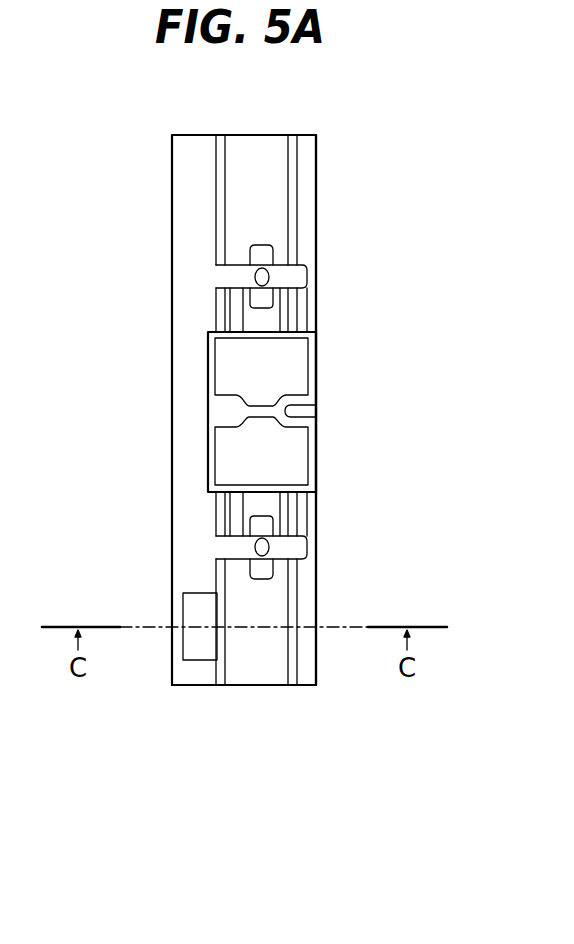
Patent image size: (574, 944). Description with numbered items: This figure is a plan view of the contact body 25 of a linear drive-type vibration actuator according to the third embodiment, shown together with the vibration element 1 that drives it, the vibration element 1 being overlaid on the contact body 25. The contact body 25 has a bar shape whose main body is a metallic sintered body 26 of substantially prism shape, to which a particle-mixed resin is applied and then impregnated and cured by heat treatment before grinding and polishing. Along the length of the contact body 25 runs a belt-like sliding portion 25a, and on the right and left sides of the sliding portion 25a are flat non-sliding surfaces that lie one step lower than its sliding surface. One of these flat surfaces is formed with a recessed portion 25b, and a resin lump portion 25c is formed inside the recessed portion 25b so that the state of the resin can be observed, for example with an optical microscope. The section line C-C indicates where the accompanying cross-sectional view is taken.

The contact body 25 is at (262, 97).
The sliding portion 25a is at (240, 193).
The recessed portion 25b is at (205, 660).
The resin lump portion 25c is at (193, 613).
The vibration element 1 is at (293, 373).
The metallic sintered body 26 is at (316, 572).